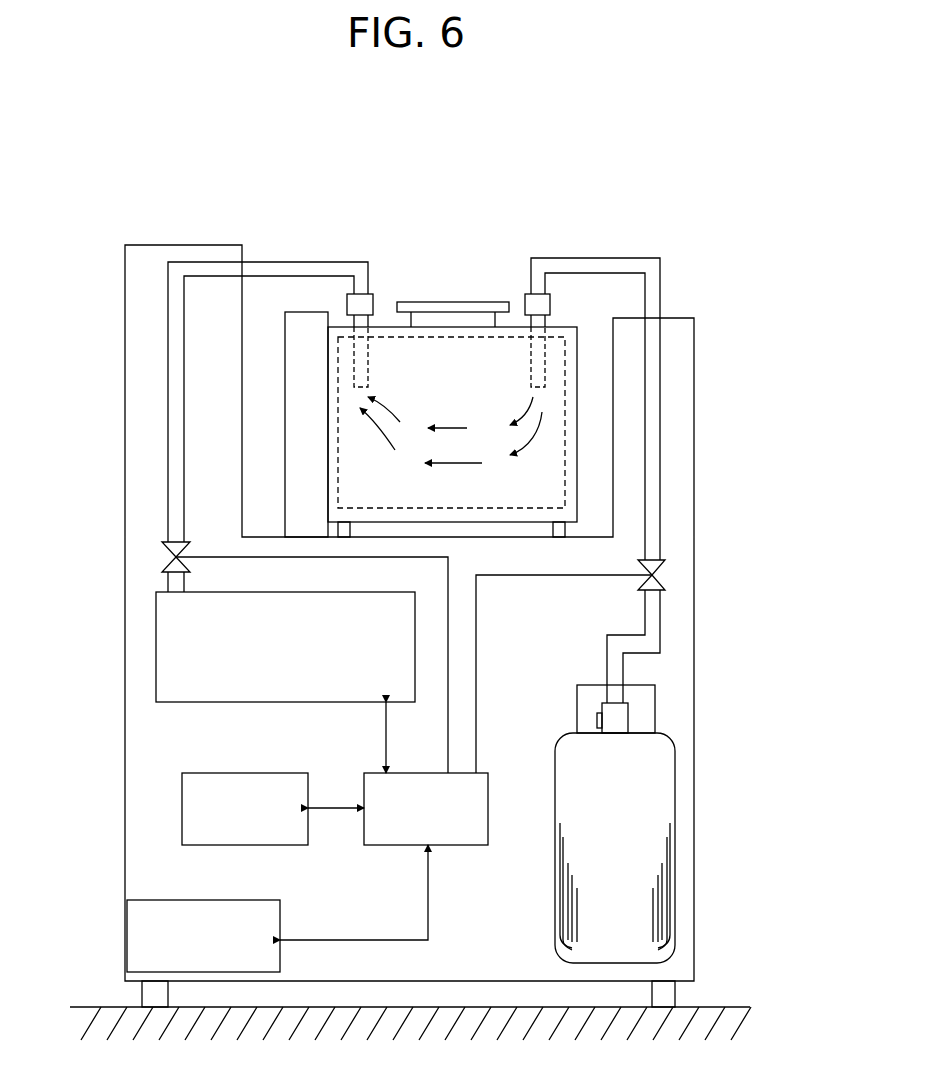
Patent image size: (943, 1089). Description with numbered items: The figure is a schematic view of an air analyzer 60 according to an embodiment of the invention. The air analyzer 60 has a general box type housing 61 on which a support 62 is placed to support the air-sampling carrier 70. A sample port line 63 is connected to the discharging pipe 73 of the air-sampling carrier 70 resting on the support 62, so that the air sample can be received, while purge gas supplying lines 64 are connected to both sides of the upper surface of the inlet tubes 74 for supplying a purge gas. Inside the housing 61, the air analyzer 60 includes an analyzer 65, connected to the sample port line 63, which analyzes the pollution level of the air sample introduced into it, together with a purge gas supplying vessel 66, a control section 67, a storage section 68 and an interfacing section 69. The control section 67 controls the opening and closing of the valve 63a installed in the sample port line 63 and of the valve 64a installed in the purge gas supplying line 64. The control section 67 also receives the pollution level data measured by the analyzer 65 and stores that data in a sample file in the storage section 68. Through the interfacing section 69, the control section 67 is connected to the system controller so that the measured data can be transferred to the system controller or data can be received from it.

The air analyzer 60 is at (429, 178).
The housing 61 is at (125, 810).
The support 62 is at (605, 537).
The sample port line 63 is at (308, 262).
The valve 63a is at (162, 550).
The purge gas supplying line 64 is at (593, 258).
The valve 64a is at (665, 565).
The analyzer 65 is at (156, 636).
The purge gas supplying vessel 66 is at (675, 800).
The control section 67 is at (480, 845).
The storage section 68 is at (298, 845).
The interfacing section 69 is at (222, 900).
The air-sampling carrier 70 is at (453, 327).
The discharging pipe 73 is at (373, 318).
The inlet tube 74 is at (550, 318).